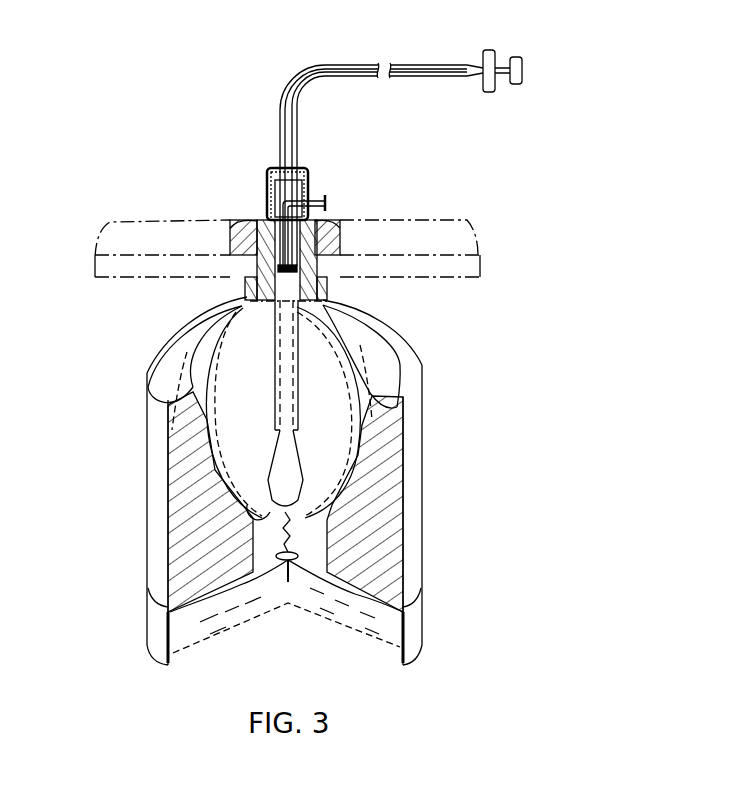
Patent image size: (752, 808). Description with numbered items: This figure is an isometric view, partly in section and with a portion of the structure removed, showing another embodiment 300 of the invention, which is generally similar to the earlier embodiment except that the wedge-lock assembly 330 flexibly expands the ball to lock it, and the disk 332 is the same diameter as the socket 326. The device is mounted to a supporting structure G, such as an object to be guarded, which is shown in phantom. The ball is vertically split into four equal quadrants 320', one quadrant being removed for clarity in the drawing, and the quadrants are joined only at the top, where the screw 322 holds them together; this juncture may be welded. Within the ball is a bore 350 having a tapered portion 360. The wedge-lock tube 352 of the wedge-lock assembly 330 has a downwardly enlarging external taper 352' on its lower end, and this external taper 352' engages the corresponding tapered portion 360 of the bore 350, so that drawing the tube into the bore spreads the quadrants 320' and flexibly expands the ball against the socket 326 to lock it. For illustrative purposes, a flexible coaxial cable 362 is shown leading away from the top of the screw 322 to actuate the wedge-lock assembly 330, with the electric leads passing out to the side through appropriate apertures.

The embodiment 300 is at (222, 98).
The flexible coaxial cable 362 is at (302, 98).
The supporting structure G is at (122, 223).
The screw 322 is at (267, 220).
The wedge-lock assembly 330 is at (268, 349).
The bore 350 is at (277, 370).
The wedge-lock tube 352 is at (216, 412).
The external taper 352' is at (177, 414).
The socket 326 is at (146, 492).
The quadrants 320' is at (240, 522).
The tapered portion 360 is at (273, 524).
The disk 332 is at (157, 633).